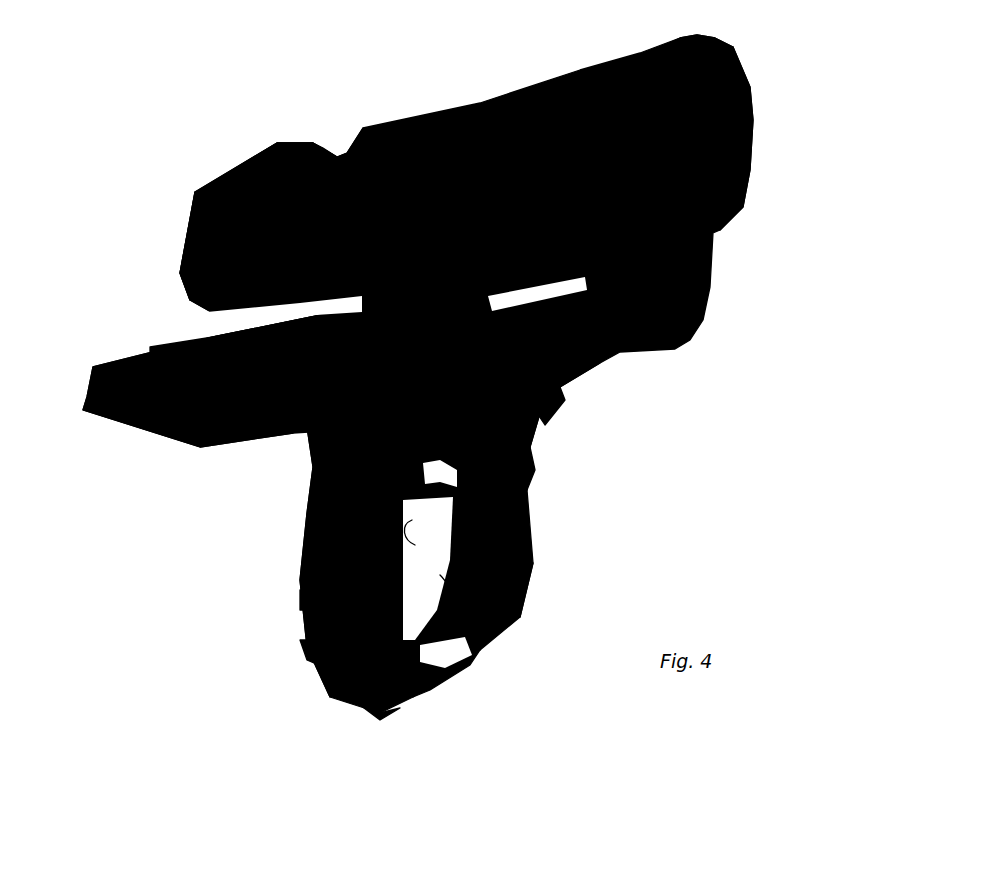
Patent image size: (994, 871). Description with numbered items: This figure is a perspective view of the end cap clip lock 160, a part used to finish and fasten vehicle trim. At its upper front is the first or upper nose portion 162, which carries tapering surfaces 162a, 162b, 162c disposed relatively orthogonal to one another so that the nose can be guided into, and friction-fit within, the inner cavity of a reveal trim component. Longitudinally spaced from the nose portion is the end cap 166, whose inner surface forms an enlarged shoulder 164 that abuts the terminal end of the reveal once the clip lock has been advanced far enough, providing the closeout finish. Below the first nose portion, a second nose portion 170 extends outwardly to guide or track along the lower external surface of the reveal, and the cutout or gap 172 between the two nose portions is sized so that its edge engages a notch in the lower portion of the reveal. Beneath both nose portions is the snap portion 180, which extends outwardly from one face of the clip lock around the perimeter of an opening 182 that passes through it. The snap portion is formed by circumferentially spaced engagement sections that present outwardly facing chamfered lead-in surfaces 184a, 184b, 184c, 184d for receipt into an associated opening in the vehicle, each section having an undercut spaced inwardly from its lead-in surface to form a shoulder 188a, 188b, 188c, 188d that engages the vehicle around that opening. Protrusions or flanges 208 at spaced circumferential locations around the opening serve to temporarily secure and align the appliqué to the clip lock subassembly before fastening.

The end cap clip lock 160 is at (433, 384).
The first or upper nose portion 162 is at (228, 229).
The tapering surface 162a is at (255, 310).
The tapering surface 162b is at (195, 200).
The tapering surface 162c is at (243, 175).
The enlarged shoulder 164 is at (667, 48).
The end cap 166 is at (745, 75).
The second nose portion 170 is at (87, 393).
The cutout or gap 172 is at (300, 440).
The snap portion 180 is at (432, 564).
The opening 182 is at (490, 637).
The chamfered lead-in surface 184a is at (525, 455).
The chamfered lead-in surface 184b is at (530, 585).
The chamfered lead-in surface 184c is at (415, 705).
The chamfered lead-in surface 184d is at (300, 655).
The shoulder 188a is at (540, 418).
The shoulder 188b is at (525, 480).
The shoulder 188c is at (365, 715).
The shoulder 188d is at (300, 598).
The protrusions or flanges 208 is at (406, 508).